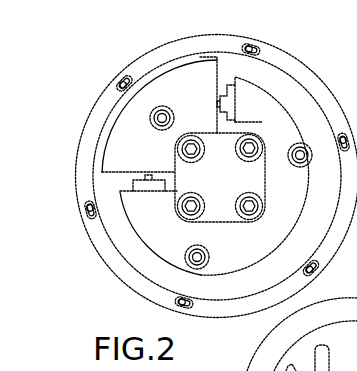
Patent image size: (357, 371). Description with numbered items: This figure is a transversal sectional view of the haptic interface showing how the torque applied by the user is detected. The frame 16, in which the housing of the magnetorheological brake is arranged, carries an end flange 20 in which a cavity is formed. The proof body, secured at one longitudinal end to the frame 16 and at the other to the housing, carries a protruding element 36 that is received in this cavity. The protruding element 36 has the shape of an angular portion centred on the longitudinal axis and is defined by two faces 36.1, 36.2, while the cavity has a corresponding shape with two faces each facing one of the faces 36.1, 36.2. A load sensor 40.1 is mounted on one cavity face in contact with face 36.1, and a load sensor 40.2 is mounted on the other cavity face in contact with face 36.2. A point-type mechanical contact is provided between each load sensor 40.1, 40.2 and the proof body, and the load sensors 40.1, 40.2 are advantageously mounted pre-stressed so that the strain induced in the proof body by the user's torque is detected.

The second end flange 20 is at (104, 112).
The protruding element 36 is at (172, 97).
The face of the angular portion 36.1 is at (112, 196).
The face of the angular portion 36.2 is at (220, 63).
The load sensor 40.1 is at (128, 166).
The load sensor 40.2 is at (209, 94).
The frame 16 is at (275, 83).